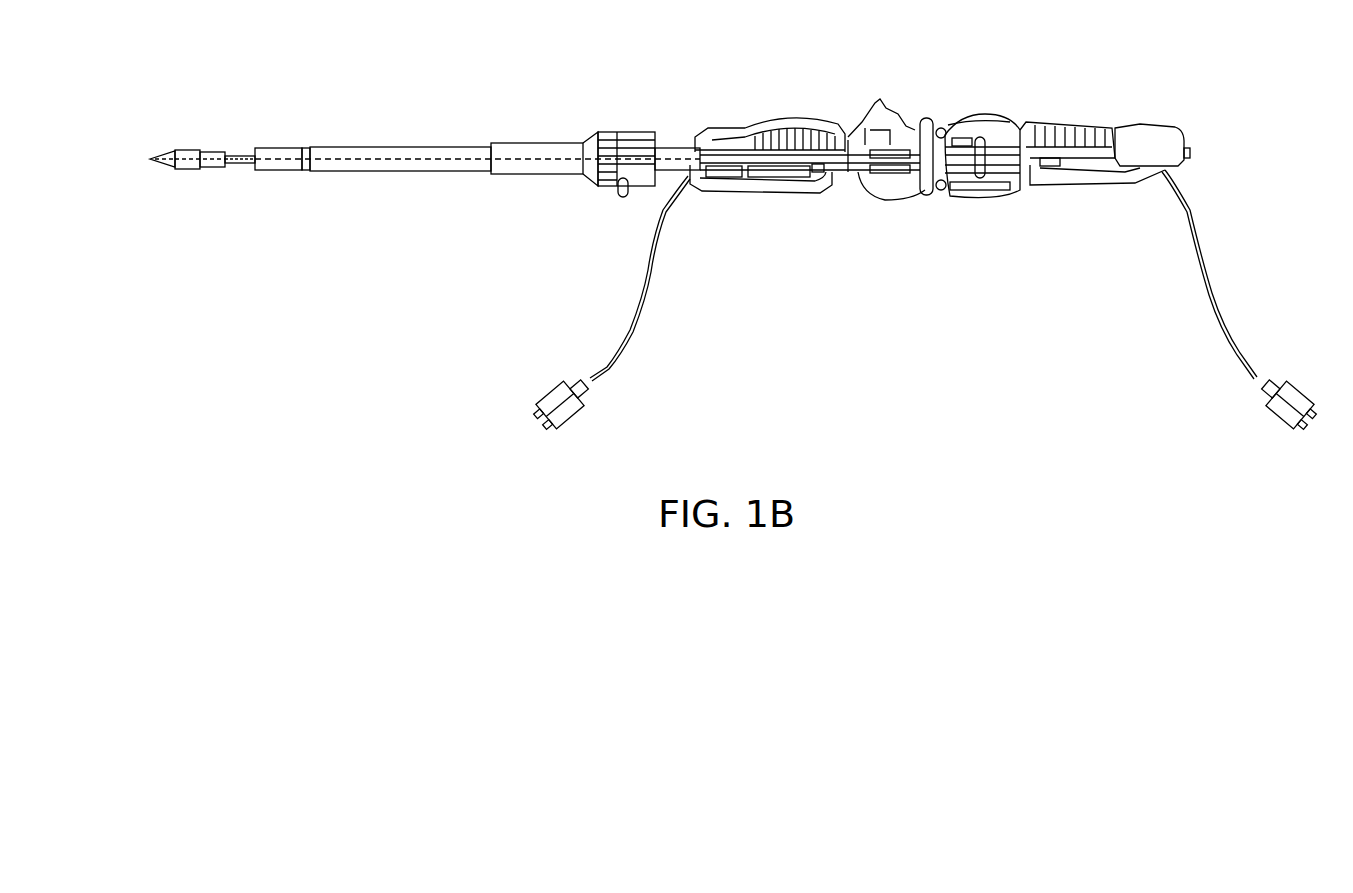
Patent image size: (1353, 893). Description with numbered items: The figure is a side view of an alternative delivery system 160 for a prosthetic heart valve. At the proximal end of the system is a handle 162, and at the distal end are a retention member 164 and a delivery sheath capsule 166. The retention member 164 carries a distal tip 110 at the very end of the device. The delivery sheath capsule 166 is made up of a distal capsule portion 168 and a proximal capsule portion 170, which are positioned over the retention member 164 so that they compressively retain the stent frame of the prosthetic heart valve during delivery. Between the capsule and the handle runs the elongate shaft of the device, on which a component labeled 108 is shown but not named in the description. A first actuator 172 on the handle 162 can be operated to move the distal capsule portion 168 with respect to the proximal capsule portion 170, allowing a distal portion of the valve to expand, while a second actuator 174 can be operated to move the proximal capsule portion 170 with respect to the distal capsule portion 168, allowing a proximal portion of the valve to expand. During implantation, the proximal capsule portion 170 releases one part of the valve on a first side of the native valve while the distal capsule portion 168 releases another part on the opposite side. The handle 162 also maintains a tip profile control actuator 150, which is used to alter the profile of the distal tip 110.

The delivery system 160 is at (395, 38).
The delivery sheath capsule 166 is at (150, 125).
The distal tip 110 is at (165, 152).
The distal capsule portion 168 is at (191, 170).
The retention member 164 is at (245, 164).
The proximal capsule portion 170 is at (293, 171).
The elongated shaft sleeve 108 is at (527, 158).
The first actuator 172 is at (785, 122).
The actuator 174 is at (935, 125).
The handle 162 is at (997, 108).
The tip profile control actuator 150 is at (1165, 129).